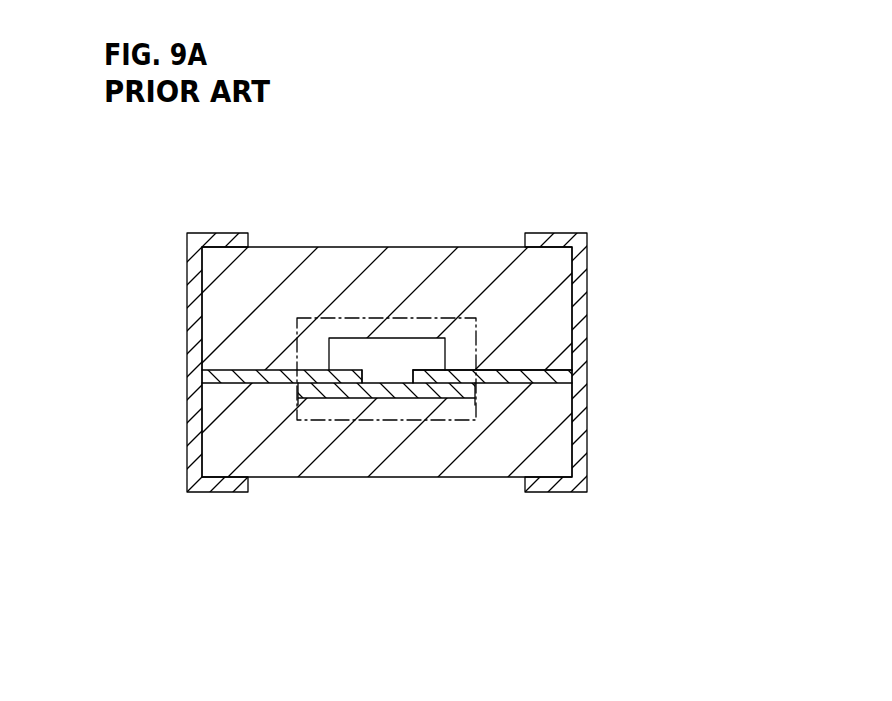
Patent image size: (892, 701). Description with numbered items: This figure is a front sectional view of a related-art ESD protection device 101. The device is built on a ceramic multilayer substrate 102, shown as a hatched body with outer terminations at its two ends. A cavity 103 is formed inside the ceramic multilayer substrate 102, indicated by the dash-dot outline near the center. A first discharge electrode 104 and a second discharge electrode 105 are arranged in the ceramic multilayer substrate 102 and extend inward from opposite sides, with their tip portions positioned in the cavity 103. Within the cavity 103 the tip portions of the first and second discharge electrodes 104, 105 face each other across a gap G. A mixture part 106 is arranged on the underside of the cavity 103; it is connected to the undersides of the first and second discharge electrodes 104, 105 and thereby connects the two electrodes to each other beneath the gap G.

The ESD protection device 101 is at (278, 245).
The ceramic multilayer substrate 102 is at (485, 246).
The cavity 103 is at (386, 361).
The first discharge electrode 104 is at (232, 372).
The second discharge electrode 105 is at (532, 371).
The mixture part 106 is at (432, 398).
The gap G is at (382, 383).